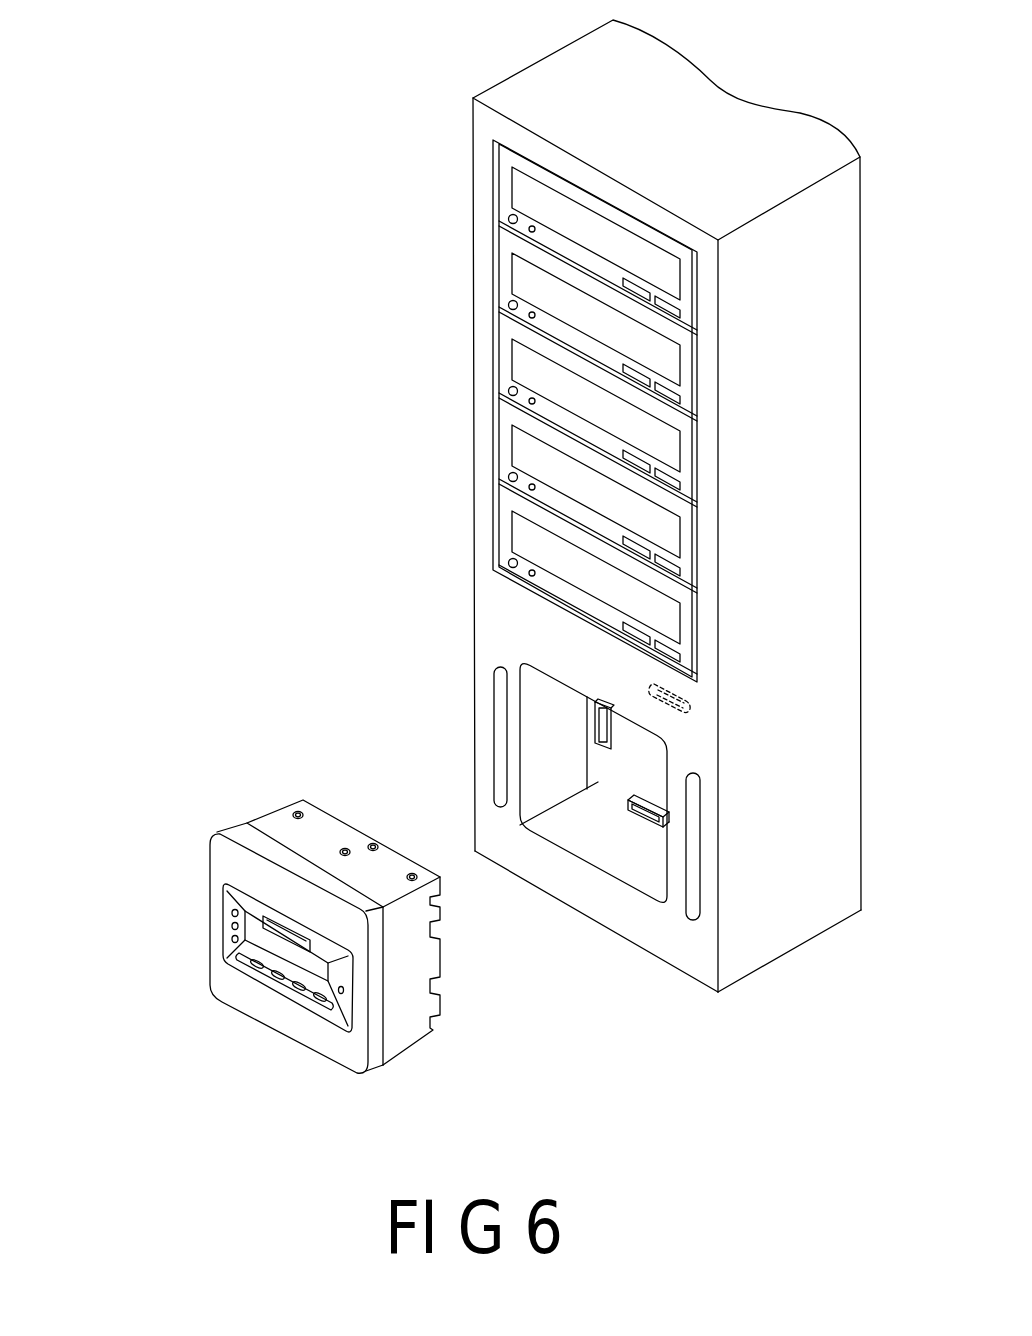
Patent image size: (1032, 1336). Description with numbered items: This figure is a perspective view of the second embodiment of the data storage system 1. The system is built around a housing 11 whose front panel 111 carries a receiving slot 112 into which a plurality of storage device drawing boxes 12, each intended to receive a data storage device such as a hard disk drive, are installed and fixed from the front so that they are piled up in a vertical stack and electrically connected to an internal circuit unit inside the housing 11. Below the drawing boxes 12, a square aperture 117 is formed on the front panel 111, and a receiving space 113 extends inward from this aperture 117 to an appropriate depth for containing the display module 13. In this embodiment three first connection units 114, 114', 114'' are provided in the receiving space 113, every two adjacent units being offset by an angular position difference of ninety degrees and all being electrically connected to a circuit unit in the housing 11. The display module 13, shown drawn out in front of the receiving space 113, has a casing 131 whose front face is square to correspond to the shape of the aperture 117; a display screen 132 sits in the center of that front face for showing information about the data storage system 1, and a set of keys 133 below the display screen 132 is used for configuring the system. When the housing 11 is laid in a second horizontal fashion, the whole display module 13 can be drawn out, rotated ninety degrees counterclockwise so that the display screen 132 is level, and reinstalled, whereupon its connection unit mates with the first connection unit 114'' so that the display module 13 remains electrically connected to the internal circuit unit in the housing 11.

The data storage system 1 is at (364, 162).
The housing 11 is at (442, 397).
The front panel 111 is at (478, 797).
The receiving slot 112 is at (518, 458).
The receiving space 113 is at (637, 858).
The first connection unit 114 is at (509, 638).
The first connection unit 114' is at (470, 690).
The first connection unit 114'' is at (740, 840).
The square aperture 117 is at (553, 742).
The storage device drawing box 12 is at (525, 280).
The display module 13 is at (197, 843).
The casing 131 is at (410, 1030).
The display screen 132 is at (258, 933).
The set of keys 133 is at (247, 960).